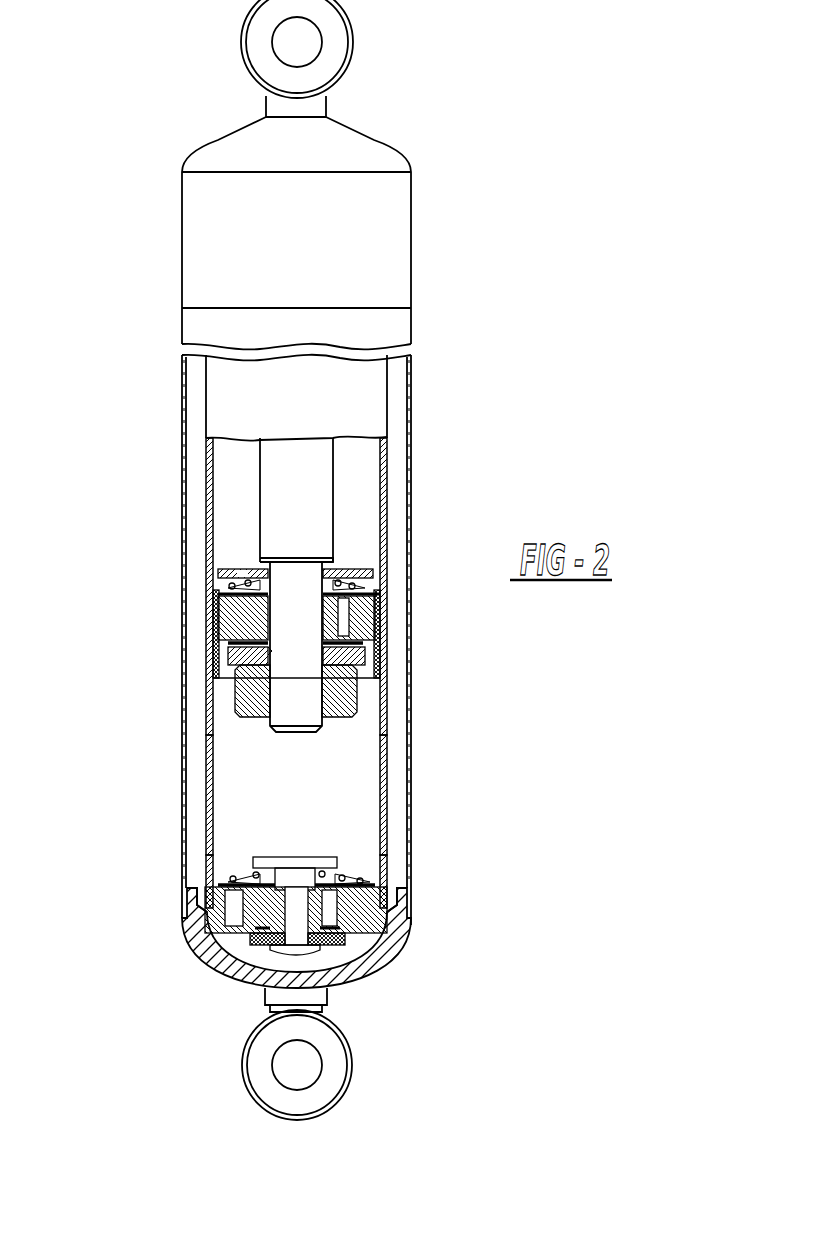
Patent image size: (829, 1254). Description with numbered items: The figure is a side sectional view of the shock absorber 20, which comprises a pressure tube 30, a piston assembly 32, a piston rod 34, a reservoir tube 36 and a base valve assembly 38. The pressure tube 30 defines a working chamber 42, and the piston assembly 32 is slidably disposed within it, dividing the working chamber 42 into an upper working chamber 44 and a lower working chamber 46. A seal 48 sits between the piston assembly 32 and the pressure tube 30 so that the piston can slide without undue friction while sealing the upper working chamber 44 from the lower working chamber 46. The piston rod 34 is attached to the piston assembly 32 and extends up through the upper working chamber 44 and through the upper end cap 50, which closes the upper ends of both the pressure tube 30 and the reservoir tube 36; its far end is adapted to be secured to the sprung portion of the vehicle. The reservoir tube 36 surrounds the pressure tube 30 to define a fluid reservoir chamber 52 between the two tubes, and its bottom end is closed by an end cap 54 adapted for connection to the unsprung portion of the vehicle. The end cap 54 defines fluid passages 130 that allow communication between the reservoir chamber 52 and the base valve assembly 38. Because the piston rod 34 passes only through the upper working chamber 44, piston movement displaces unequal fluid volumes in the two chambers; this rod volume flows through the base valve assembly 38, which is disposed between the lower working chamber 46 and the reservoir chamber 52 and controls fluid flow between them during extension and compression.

The shock absorber 20 is at (490, 87).
The pressure tube 30 is at (384, 750).
The piston assembly 32 is at (374, 618).
The piston rod 34 is at (303, 508).
The reservoir tube 36 is at (410, 819).
The base valve assembly 38 is at (364, 912).
The working chamber 42 is at (256, 811).
The upper working chamber 44 is at (368, 488).
The lower working chamber 46 is at (301, 796).
The seal 48 is at (215, 656).
The upper end cap 50 is at (347, 141).
The fluid reservoir chamber 52 is at (197, 501).
The end cap 54 is at (377, 948).
The fluid passages 130 is at (193, 922).